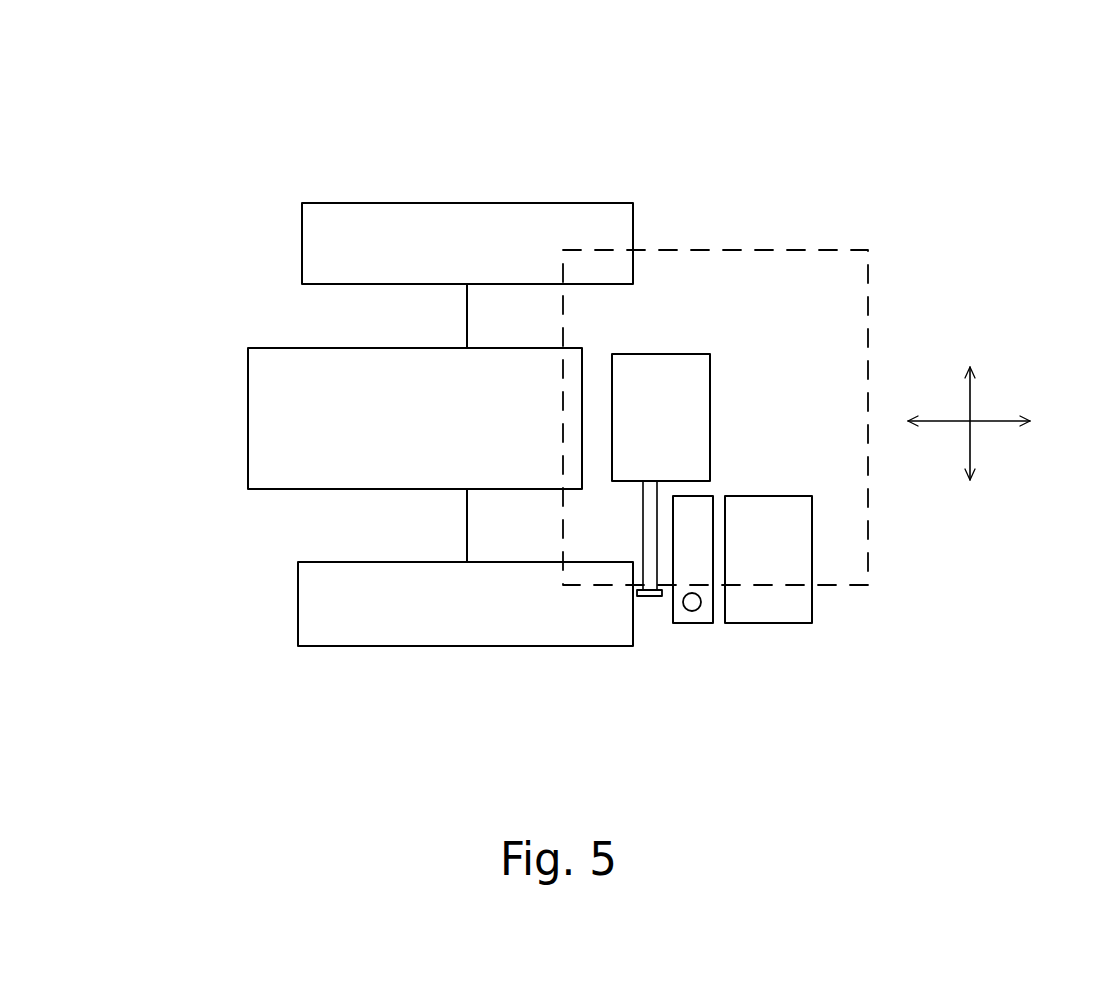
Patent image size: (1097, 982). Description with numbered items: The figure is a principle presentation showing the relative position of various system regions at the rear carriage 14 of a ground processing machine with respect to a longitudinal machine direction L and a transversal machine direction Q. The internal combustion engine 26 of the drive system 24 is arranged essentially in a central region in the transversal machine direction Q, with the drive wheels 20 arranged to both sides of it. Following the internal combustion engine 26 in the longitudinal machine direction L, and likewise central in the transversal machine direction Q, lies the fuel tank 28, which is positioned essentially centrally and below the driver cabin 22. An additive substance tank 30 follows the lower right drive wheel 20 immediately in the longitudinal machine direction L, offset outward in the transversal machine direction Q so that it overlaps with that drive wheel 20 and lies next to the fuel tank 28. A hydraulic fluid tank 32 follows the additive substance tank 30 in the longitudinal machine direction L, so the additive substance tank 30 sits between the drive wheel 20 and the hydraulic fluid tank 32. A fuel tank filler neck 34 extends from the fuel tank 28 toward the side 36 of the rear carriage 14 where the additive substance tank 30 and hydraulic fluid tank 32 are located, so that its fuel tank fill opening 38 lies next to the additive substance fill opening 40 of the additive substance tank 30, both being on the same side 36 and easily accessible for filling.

The rear carriage 14 is at (950, 140).
The drive wheels 20 is at (372, 203).
The driver cabin 22 is at (712, 250).
The drive system 24 is at (220, 553).
The internal combustion engine 26 is at (258, 419).
The fuel tank 28 is at (710, 390).
The additive substance tank 30 is at (713, 610).
The hydraulic fluid tank 32 is at (813, 605).
The fuel tank filler neck 34 is at (640, 525).
The side of the rear carriage 36 is at (750, 705).
The fuel tank fill opening 38 is at (648, 597).
The additive substance fill opening 40 is at (692, 611).
The longitudinal machine direction L is at (1005, 420).
The transversal machine direction Q is at (970, 458).